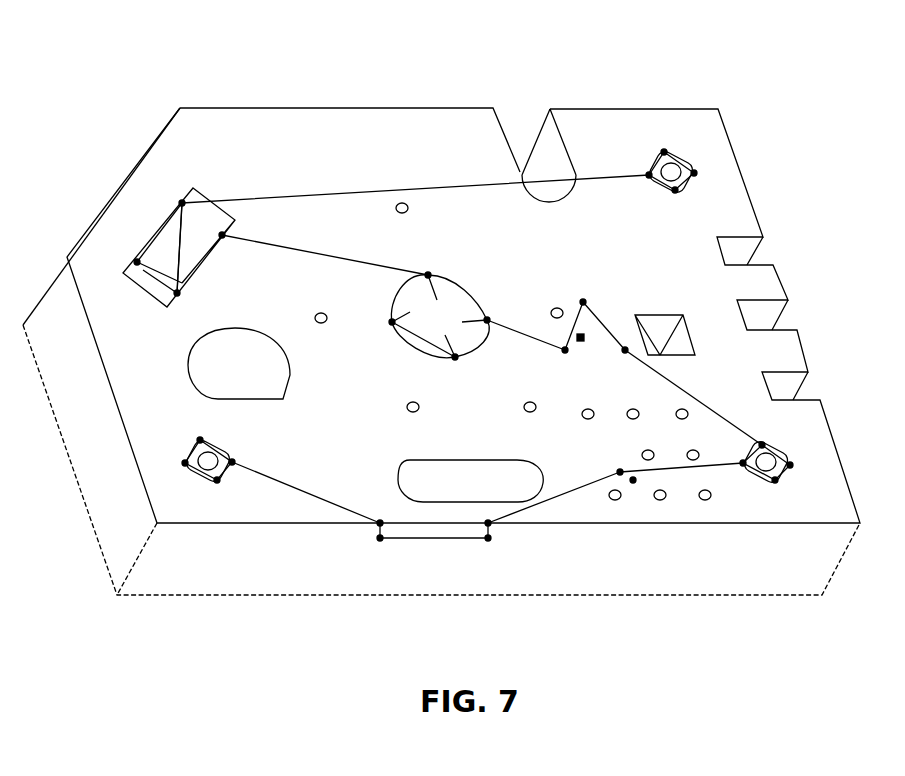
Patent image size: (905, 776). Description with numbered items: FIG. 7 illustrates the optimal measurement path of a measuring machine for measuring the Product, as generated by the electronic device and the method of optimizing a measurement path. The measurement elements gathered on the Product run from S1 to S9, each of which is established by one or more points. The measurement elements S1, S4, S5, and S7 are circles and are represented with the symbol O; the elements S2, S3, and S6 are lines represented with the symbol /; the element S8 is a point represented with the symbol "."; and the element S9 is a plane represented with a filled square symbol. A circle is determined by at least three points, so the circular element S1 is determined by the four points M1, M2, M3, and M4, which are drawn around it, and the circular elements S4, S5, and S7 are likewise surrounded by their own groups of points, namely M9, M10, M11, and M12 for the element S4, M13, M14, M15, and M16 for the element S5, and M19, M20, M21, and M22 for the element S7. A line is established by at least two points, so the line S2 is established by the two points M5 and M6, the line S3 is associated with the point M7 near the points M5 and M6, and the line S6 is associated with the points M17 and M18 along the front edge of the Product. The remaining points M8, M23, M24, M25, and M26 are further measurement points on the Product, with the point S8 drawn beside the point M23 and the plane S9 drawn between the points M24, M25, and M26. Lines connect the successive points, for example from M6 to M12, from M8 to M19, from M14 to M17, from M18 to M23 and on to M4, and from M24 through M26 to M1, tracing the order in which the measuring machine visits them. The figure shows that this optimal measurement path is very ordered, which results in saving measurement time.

The product Product is at (335, 105).
The point M1 is at (759, 434).
The point M2 is at (805, 473).
The point M3 is at (766, 494).
The point M4 is at (683, 480).
The point M5 is at (114, 262).
The point M6 is at (399, 234).
The measurement point M7 is at (191, 304).
The measurement point M8 is at (323, 249).
The measurement point M9 is at (659, 141).
The measurement point M10 is at (716, 182).
The measurement point M11 is at (675, 205).
The measurement point M12 is at (623, 189).
The measurement point M13 is at (185, 428).
The measurement point M14 is at (304, 490).
The measurement point M15 is at (210, 502).
The measurement point M16 is at (170, 480).
The measurement point M17 is at (372, 548).
The measurement point M18 is at (490, 548).
The measurement point M19 is at (428, 261).
The measurement point M20 is at (524, 325).
The measurement point M21 is at (460, 371).
The measurement point M22 is at (392, 337).
The measurement point M23 is at (555, 488).
The measurement point M24 is at (591, 314).
The measurement point M25 is at (555, 367).
The measurement point M26 is at (683, 396).
The measurement element S1 is at (766, 462).
The measurement element S2 is at (152, 232).
The measurement element S3 is at (205, 248).
The measurement element S4 is at (671, 171).
The measurement element S5 is at (208, 460).
The measurement element S6 is at (434, 551).
The measurement element S7 is at (440, 316).
The measurement element S8 is at (645, 486).
The measurement element S9 is at (592, 344).